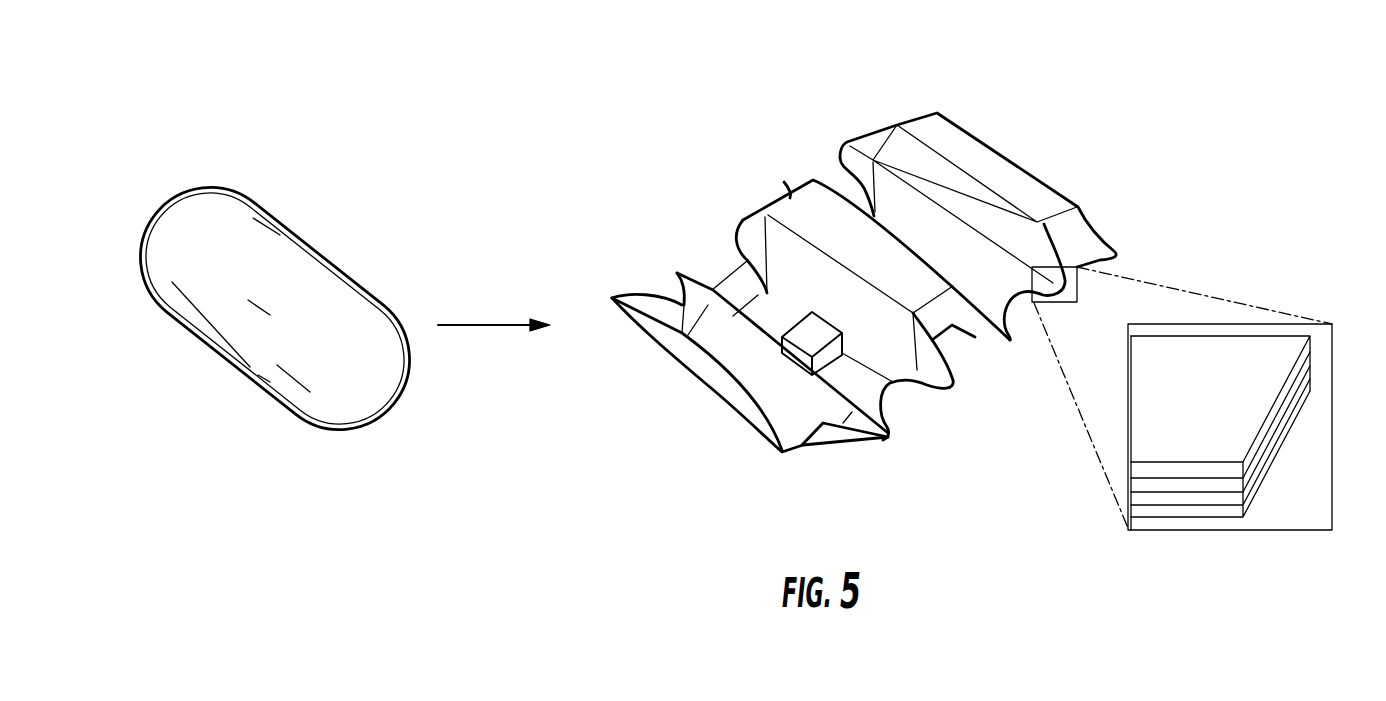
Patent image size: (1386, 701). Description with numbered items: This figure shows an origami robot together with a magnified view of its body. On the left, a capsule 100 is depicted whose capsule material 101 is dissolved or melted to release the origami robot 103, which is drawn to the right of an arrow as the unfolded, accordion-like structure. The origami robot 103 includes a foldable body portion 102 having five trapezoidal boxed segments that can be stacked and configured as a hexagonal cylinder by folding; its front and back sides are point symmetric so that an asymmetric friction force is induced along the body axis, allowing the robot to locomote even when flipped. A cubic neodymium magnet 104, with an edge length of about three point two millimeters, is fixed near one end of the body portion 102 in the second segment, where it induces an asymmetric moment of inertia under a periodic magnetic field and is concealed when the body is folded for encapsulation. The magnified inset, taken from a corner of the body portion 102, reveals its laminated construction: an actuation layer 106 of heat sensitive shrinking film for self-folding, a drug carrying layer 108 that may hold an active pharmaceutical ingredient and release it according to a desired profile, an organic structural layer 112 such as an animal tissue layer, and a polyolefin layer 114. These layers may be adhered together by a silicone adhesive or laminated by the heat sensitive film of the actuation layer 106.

The capsule 100 is at (292, 176).
The capsule material 101 is at (337, 270).
The foldable body portion 102 is at (937, 127).
The origami robot 103 is at (787, 146).
The magnet 104 is at (812, 335).
The actuation layer 106 is at (1130, 510).
The drug carrying layer 108 is at (1130, 497).
The organic structural layer 112 is at (1130, 480).
The polyolefin layer 114 is at (1243, 347).